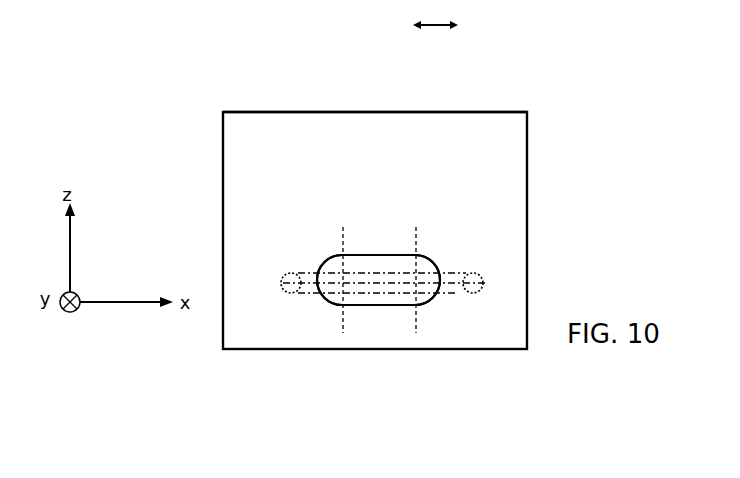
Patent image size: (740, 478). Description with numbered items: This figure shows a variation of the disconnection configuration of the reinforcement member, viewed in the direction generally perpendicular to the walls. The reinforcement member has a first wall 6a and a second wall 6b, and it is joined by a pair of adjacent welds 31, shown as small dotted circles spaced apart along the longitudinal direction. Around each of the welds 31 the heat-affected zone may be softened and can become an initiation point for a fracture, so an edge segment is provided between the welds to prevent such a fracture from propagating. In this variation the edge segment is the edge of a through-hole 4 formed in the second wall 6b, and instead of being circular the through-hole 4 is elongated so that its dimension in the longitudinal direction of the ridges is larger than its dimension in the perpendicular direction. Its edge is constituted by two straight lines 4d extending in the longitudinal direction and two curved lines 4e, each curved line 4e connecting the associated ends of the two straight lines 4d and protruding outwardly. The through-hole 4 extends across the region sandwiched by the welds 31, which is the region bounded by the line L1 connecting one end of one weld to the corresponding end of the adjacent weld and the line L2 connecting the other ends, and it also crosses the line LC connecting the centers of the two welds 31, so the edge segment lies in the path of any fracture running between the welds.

The first wall of the reinforcement member 6a is at (480, 112).
The second wall of the reinforcement member 6b is at (243, 140).
The welds 31 is at (284, 272).
The through-hole 4 is at (448, 193).
The straight lines 4d is at (416, 233).
The curved lines 4e is at (324, 262).
The line connecting one end of one weld with the corresponding end of the adjacent w L1 is at (301, 272).
The line connecting the other end of one weld with the corresponding end of the adja L2 is at (305, 295).
The line connecting the centers of a pair of adjacent welds LC is at (455, 290).